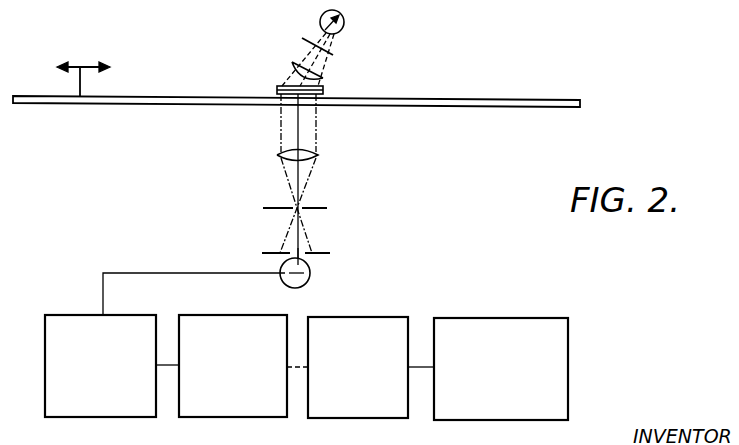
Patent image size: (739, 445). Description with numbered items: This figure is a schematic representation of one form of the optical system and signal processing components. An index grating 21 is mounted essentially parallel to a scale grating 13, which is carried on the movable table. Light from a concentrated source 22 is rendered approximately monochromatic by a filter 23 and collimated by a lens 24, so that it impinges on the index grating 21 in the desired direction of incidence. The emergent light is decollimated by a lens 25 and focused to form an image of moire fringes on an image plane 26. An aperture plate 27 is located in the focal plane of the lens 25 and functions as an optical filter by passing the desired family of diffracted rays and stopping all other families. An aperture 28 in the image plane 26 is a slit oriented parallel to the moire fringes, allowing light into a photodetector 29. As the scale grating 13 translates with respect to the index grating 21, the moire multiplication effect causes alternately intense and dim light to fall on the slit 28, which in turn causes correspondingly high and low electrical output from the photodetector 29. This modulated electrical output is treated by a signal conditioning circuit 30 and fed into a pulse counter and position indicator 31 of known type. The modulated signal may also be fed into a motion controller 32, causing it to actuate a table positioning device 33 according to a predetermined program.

The scale grating 13 is at (165, 104).
The index grating 21 is at (277, 86).
The concentrated source 22 is at (344, 22).
The filter 23 is at (335, 52).
The lens 24 is at (330, 80).
The lens 25 is at (320, 152).
The image plane 26 is at (331, 257).
The aperture plate 27 is at (327, 206).
The aperture 28 is at (298, 250).
The photodetector 29 is at (309, 284).
The signal conditioning circuit 30 is at (80, 418).
The pulse counter and position indicator 31 is at (220, 418).
The cable motion controller 32 is at (345, 418).
The table positioning device 33 is at (472, 420).